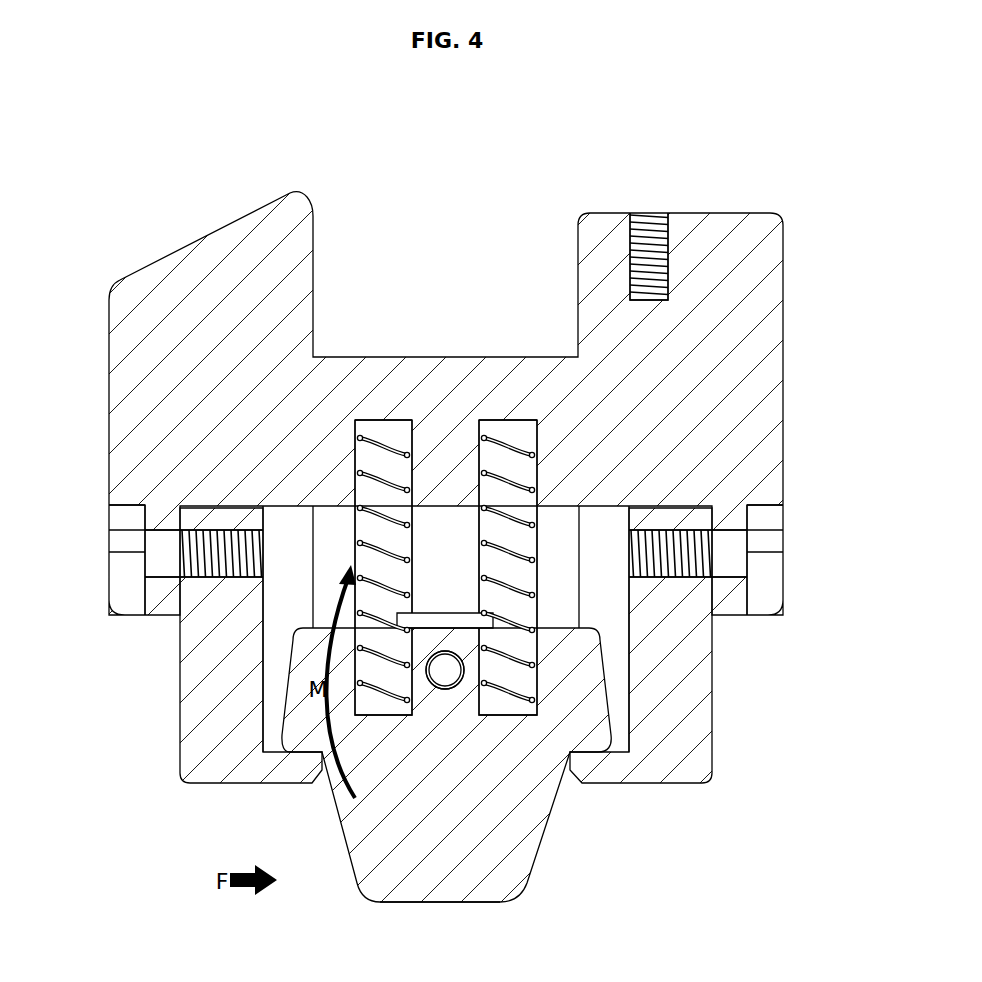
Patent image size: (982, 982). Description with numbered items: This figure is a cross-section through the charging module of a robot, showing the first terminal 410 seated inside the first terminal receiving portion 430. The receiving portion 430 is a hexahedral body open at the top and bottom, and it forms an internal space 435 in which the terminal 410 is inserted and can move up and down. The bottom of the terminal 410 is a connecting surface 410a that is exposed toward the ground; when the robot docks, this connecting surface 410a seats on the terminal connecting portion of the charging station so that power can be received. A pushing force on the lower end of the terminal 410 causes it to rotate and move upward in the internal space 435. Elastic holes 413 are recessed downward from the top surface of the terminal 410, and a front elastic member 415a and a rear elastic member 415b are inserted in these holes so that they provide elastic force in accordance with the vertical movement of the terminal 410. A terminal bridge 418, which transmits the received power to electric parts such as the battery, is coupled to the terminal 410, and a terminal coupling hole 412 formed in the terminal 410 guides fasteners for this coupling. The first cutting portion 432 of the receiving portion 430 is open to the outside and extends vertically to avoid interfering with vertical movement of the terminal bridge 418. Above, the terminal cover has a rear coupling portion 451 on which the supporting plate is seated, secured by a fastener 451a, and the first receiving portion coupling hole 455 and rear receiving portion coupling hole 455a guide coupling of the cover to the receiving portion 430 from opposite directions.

The first terminal 410 is at (353, 855).
The connecting surface 410a is at (445, 903).
The terminal coupling hole 412 is at (440, 672).
The elastic hole 413 is at (385, 717).
The front elastic member 415a is at (358, 438).
The rear elastic member 415b is at (535, 455).
The terminal bridge 418 is at (432, 540).
The first terminal receiving portion 430 is at (705, 683).
The first cutting portion 432 is at (316, 606).
The internal space 435 is at (607, 609).
The rear coupling portion 451 is at (727, 213).
The fixing screw 451a is at (644, 213).
The first receiving portion coupling hole 455 is at (158, 556).
The rear receiving portion coupling hole 455a is at (733, 556).